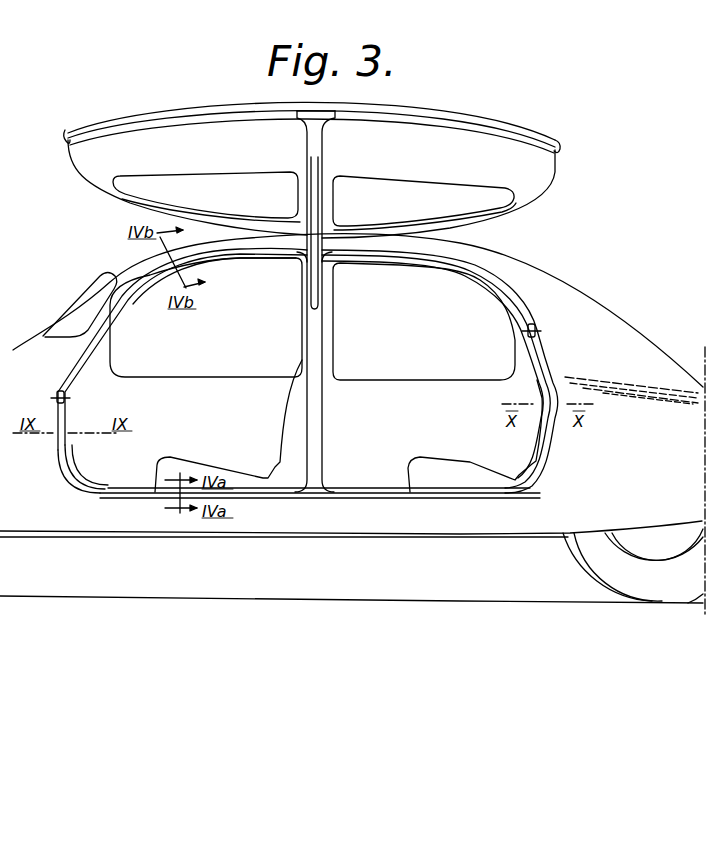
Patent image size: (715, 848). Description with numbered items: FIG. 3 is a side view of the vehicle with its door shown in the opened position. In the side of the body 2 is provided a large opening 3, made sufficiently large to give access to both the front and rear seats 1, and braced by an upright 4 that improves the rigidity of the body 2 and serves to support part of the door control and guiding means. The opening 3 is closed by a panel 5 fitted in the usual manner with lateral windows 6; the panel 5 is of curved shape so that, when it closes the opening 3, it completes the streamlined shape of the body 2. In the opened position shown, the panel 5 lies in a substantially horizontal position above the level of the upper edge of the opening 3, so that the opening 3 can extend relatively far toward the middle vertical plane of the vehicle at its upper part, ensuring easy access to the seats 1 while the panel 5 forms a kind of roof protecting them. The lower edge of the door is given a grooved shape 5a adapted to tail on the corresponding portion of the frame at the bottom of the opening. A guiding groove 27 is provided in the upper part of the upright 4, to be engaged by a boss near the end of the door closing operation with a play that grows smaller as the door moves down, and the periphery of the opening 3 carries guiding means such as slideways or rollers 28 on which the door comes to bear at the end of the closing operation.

The seats 1 is at (200, 467).
The body 2 is at (642, 336).
The opening 3 is at (477, 263).
The upright 4 is at (313, 440).
The panel 5 is at (180, 147).
The grooved edge 5a is at (98, 128).
The lateral windows 6 is at (248, 185).
The guiding groove 27 is at (314, 298).
The slideways or rollers 28 is at (55, 393).